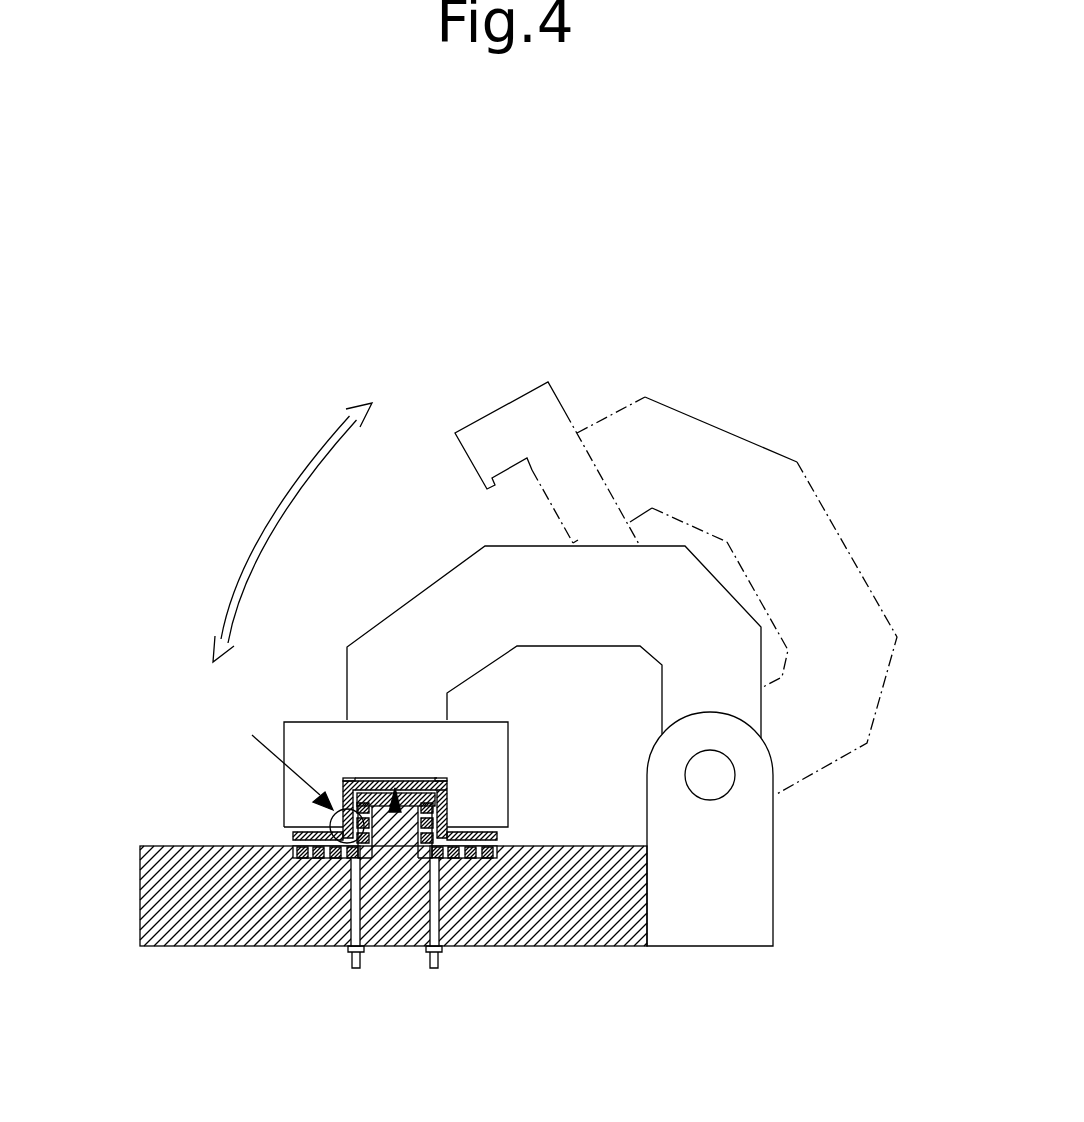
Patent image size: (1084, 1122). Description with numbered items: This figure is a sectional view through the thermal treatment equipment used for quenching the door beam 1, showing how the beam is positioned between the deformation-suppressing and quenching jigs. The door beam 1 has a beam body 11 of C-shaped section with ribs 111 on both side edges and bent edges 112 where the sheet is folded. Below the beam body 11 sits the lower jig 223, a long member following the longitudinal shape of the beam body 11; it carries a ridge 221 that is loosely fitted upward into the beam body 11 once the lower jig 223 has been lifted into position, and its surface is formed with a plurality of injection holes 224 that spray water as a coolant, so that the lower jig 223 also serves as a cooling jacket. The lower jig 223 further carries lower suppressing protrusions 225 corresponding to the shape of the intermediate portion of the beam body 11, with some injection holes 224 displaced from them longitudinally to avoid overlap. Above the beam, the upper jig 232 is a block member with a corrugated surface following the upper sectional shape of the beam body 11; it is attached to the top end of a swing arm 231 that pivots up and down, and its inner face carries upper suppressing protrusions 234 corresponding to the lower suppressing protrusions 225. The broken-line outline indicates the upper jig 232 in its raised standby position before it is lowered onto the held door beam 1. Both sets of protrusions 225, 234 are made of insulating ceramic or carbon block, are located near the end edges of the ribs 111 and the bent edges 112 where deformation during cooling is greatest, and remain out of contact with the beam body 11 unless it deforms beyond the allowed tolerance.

The door beam 1 is at (499, 788).
The beam body 11 is at (380, 781).
The ribs 111 is at (323, 833).
The bent edges 112 is at (343, 781).
The ridge 221 is at (403, 833).
The lower jig 223 is at (395, 790).
The injection holes 224 is at (292, 849).
The lower suppressing protrusions 225 is at (293, 836).
The swing arm 231 is at (667, 583).
The upper jig 232 is at (503, 738).
The upper suppressing protrusions 234 is at (443, 722).